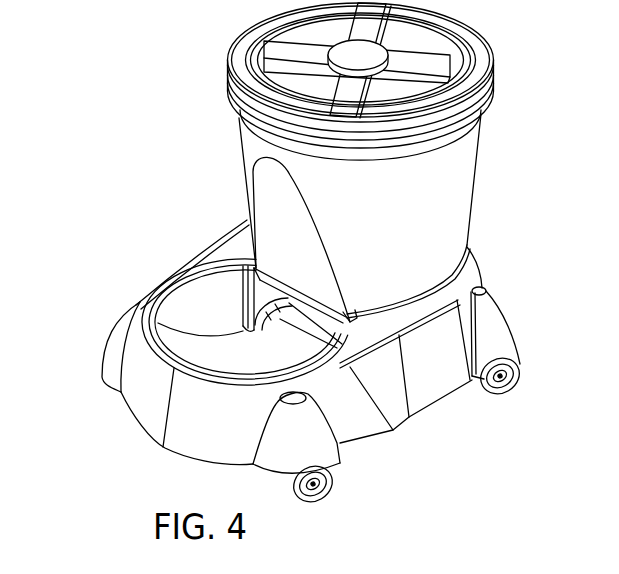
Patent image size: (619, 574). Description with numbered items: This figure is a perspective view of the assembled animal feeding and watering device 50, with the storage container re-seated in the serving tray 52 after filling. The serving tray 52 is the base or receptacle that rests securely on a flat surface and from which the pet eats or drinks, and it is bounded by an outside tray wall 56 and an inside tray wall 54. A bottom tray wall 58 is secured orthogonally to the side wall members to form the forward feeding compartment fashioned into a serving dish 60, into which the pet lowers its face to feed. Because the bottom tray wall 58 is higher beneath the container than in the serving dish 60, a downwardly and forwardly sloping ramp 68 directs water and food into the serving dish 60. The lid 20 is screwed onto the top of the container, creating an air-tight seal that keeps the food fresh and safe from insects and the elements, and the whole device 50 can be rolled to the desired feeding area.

The lid 20 is at (493, 80).
The animal feeding and watering device 50 is at (302, 256).
The serving tray 52 is at (280, 332).
The inside tray wall 54 is at (205, 297).
The outside tray wall 56 is at (152, 397).
The bottom tray wall 58 is at (210, 352).
The serving dish 60 is at (237, 348).
The sloping ramp 68 is at (307, 318).